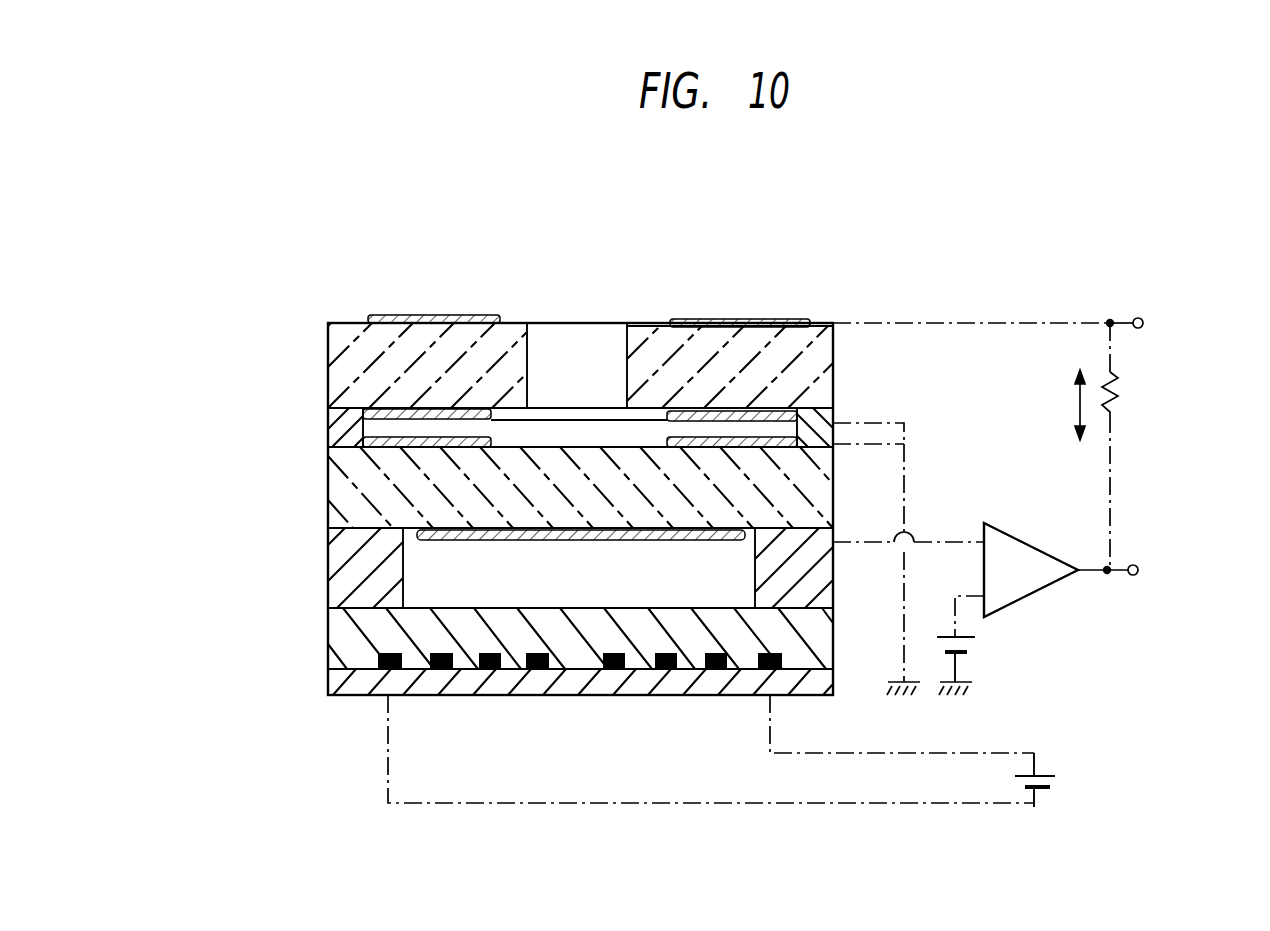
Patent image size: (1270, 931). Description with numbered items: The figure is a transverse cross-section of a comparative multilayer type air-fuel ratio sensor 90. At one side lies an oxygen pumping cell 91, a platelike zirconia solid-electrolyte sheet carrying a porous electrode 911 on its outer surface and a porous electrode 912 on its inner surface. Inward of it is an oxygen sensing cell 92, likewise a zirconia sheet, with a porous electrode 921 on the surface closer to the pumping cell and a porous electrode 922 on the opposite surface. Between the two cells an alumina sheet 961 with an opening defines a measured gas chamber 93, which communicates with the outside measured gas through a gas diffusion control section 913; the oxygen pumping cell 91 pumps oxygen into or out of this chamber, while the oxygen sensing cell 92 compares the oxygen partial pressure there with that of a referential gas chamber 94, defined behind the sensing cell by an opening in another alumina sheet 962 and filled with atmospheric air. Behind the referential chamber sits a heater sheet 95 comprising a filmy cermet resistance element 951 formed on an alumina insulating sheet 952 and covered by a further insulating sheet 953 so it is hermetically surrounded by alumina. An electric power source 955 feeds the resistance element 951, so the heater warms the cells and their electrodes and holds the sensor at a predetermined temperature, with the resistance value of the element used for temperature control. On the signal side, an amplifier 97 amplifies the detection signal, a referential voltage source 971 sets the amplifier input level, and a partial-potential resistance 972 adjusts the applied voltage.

The multilayer type air-fuel ratio sensor 90 is at (590, 214).
The oxygen pumping cell 91 is at (328, 365).
The porous electrode 911 is at (440, 316).
The porous electrode 912 is at (583, 427).
The gas diffusion control section 913 is at (578, 348).
The porous electrode 921 is at (667, 440).
The alumina sheet 961 is at (332, 422).
The measured gas chamber 93 is at (367, 425).
The oxygen sensing cell 92 is at (328, 483).
The porous electrode 922 is at (567, 540).
The referential gas chamber 94 is at (443, 567).
The alumina sheet 962 is at (347, 585).
The heater sheet 95 is at (328, 648).
The resistance element 951 is at (392, 658).
The insulating sheet 952 is at (655, 693).
The insulating sheet 953 is at (812, 648).
The electric power source 955 is at (1062, 778).
The amplifier 97 is at (1020, 573).
The referential voltage source 971 is at (977, 645).
The partial-potential resistance 972 is at (1127, 398).